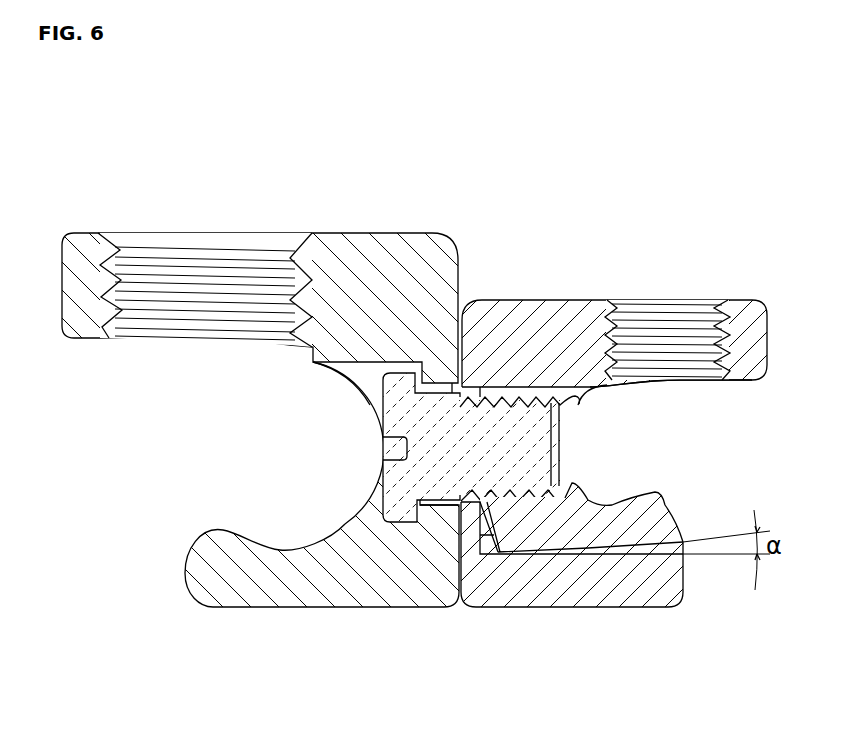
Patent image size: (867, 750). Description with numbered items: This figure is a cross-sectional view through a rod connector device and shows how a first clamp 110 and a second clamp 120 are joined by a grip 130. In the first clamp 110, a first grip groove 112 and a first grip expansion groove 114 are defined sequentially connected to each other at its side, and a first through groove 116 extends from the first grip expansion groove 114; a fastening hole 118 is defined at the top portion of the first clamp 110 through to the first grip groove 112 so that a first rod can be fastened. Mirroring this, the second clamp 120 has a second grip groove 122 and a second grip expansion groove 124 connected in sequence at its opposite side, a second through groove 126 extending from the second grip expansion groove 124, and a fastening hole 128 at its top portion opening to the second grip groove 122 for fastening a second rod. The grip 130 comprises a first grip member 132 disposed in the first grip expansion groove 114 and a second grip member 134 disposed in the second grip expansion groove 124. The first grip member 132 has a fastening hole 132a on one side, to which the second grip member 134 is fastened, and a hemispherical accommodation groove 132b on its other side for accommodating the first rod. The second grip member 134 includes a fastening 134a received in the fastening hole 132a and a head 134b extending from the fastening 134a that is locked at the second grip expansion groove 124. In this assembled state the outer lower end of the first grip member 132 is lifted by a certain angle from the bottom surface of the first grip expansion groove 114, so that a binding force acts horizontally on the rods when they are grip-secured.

The first clamp 110 is at (614, 335).
The first grip groove 112 is at (630, 438).
The first grip expansion groove 114 is at (600, 393).
The first through groove 116 is at (540, 472).
The fastening hole 118 is at (683, 300).
The second clamp 120 is at (260, 378).
The second grip groove 122 is at (267, 437).
The second grip expansion groove 124 is at (350, 384).
The second through groove 126 is at (383, 430).
The fastening hole 128 is at (250, 232).
The grip 130 is at (515, 484).
The first grip member 132 is at (615, 575).
The fastening hole 132a is at (593, 552).
The hemispherical accommodation groove 132b is at (610, 504).
The second grip member 134 is at (463, 461).
The fastening 134a is at (485, 392).
The head 134b is at (405, 512).